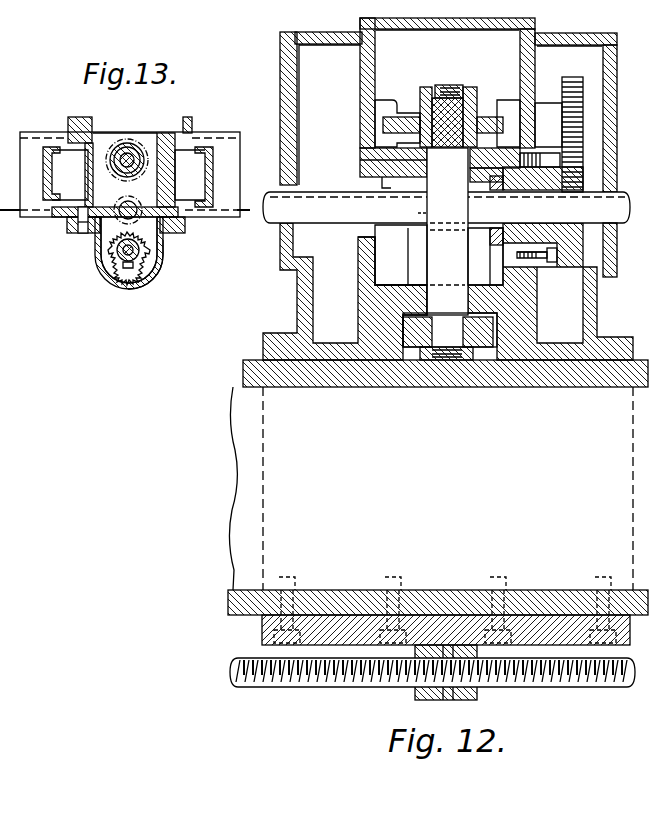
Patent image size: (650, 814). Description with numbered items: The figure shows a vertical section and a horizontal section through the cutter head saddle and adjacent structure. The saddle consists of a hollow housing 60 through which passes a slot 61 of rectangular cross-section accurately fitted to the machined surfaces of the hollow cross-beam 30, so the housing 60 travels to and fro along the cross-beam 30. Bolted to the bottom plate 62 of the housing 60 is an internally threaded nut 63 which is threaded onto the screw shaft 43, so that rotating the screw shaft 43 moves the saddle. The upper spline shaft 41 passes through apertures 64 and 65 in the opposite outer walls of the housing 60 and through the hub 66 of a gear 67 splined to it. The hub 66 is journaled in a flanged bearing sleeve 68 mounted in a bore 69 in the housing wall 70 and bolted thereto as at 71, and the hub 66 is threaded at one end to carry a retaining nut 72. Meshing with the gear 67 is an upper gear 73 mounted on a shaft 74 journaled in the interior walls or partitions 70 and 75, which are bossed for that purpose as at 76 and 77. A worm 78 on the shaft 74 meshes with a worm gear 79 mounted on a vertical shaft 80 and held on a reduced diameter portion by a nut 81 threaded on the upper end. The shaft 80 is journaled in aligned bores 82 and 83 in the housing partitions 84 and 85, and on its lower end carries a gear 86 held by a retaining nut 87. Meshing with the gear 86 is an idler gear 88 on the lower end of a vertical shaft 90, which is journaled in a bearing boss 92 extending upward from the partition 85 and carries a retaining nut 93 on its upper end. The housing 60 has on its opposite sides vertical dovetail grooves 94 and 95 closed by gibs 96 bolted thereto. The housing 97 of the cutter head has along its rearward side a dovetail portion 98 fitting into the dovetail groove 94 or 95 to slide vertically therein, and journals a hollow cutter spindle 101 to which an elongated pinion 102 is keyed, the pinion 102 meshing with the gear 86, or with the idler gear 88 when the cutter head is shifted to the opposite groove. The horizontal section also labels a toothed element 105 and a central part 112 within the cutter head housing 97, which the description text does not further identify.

In FIG. 12, the cross-beam 30 is at (236, 489).
In FIG. 13, the cross-beam 30 is at (1, 136).
In FIG. 12, the upper spline shaft 41 is at (322, 212).
In FIG. 12, the screw shaft 43 is at (318, 682).
In FIG. 12, the housing 60 is at (298, 304).
In FIG. 13, the housing 60 is at (55, 207).
In FIG. 12, the slot 61 is at (304, 387).
In FIG. 12, the bottom plate 62 is at (262, 628).
In FIG. 12, the internally threaded nut 63 is at (462, 700).
In FIG. 12, the aperture 64 is at (617, 240).
In FIG. 12, the aperture 65 is at (297, 174).
In FIG. 12, the hub 66 is at (526, 188).
In FIG. 12, the gear 67 is at (585, 171).
In FIG. 12, the flanged bearing sleeve 68 is at (540, 264).
In FIG. 12, the bore 69 is at (527, 290).
In FIG. 12, the housing wall 70 is at (535, 54).
In FIG. 12, the bolt 71 is at (557, 256).
In FIG. 12, the retaining nut 72 is at (490, 178).
In FIG. 12, the upper gear 73 is at (578, 77).
In FIG. 12, the shaft 74 is at (548, 108).
In FIG. 12, the interior wall 75 is at (360, 72).
In FIG. 12, the boss 76 is at (507, 100).
In FIG. 12, the boss 77 is at (386, 100).
In FIG. 12, the worm 78 is at (442, 98).
In FIG. 12, the worm gear 79 is at (405, 113).
In FIG. 12, the vertical shaft 80 is at (447, 231).
In FIG. 13, the vertical shaft 80 is at (132, 203).
In FIG. 12, the nut 81 is at (466, 90).
In FIG. 12, the bore 82 is at (360, 158).
In FIG. 12, the bore 83 is at (425, 298).
In FIG. 12, the housing partition 84 is at (396, 185).
In FIG. 12, the housing partition 85 is at (395, 287).
In FIG. 12, the gear 86 is at (411, 350).
In FIG. 13, the gear 86 is at (115, 195).
In FIG. 12, the retaining nut 87 is at (478, 350).
In FIG. 13, the idler gear 88 is at (130, 142).
In FIG. 13, the vertical shaft 90 is at (124, 152).
In FIG. 12, the bearing boss 92 is at (408, 246).
In FIG. 13, the bearing boss 92 is at (138, 152).
In FIG. 12, the retaining nut 93 is at (417, 212).
In FIG. 13, the dovetail groove 94 is at (187, 229).
In FIG. 13, the dovetail groove 95 is at (93, 122).
In FIG. 13, the gib 96 is at (88, 234).
In FIG. 13, the housing 97 is at (103, 277).
In FIG. 13, the dovetail portion 98 is at (160, 253).
In FIG. 13, the hollow cutter spindle 101 is at (145, 272).
In FIG. 13, the elongated pinion 102 is at (160, 268).
In FIG. 13, the ratchet gear 105 is at (122, 268).
In FIG. 13, the ratchet shaft 112 is at (132, 260).